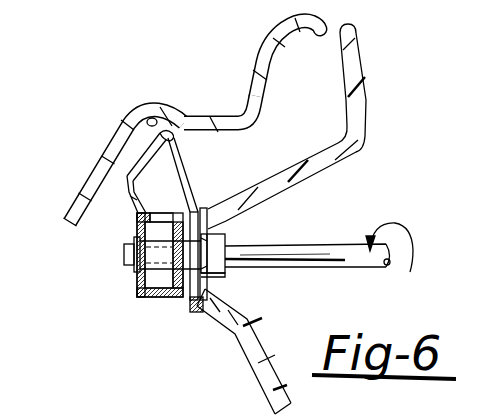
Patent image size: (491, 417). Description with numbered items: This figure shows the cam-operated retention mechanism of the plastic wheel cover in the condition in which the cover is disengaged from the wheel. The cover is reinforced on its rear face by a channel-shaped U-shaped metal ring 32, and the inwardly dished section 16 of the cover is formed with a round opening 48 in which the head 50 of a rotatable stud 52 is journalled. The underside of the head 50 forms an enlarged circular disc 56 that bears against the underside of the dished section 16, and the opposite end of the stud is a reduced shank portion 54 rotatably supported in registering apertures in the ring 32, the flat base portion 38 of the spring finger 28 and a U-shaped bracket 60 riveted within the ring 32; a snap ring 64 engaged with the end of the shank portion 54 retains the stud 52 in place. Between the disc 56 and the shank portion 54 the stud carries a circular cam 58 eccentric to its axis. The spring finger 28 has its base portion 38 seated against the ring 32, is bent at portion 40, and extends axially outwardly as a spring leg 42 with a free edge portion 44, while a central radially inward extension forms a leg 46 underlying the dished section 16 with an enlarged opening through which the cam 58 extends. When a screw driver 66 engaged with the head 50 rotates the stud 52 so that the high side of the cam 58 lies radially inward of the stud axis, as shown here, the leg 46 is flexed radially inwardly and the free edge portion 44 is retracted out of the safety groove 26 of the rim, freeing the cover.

The inwardly dished section 16 is at (250, 299).
The safety groove 26 is at (161, 107).
The spring finger 28 is at (191, 162).
The U-shaped metal ring 32 is at (166, 297).
The flat base portion 38 is at (136, 298).
The bent portion 40 is at (133, 220).
The spring leg 42 is at (129, 188).
The free edge portion 44 is at (171, 137).
The leg 46 is at (195, 196).
The round opening 48 is at (224, 223).
The head 50 is at (230, 272).
The rotatable stud 52 is at (181, 311).
The reduced shank portion 54 is at (133, 268).
The enlarged circular disc 56 is at (194, 298).
The circular cam 58 is at (232, 241).
The U-shaped bracket 60 is at (172, 212).
The snap ring 64 is at (123, 250).
The screw driver 66 is at (348, 245).